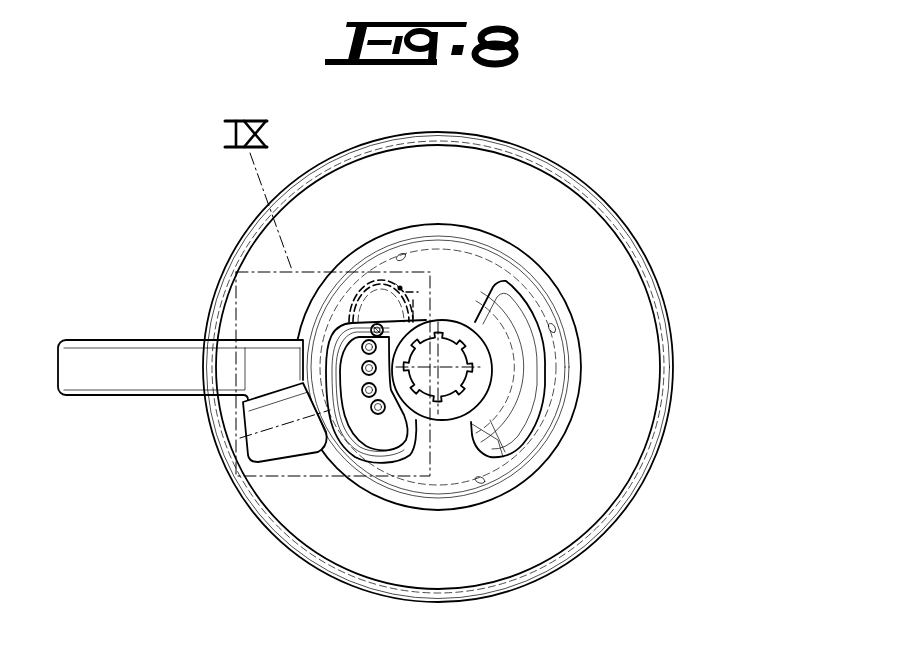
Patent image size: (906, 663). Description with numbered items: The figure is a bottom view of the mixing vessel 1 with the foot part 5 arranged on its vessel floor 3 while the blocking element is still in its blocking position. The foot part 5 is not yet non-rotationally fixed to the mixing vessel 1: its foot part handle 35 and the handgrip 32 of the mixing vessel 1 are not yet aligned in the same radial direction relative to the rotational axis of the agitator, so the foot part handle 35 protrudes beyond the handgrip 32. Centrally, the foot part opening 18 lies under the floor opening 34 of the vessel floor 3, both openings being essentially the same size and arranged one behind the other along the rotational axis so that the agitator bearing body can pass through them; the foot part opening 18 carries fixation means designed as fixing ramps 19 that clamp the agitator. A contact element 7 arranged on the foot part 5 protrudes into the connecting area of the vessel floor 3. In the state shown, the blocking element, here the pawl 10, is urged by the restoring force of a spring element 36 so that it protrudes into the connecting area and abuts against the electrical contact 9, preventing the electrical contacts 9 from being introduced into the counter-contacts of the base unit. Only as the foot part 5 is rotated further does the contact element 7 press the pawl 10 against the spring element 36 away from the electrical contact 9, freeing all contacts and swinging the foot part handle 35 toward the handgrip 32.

The mixing vessel 1 is at (645, 222).
The vessel floor 3 is at (512, 558).
The foot part 5 is at (530, 485).
The contact element 7 is at (368, 324).
The electrical contact 9 is at (367, 393).
The pawl 10 is at (392, 317).
The foot part opening 18 is at (440, 362).
The fixing ramps 19 is at (463, 386).
The handgrip 32 is at (138, 373).
The floor opening 34 is at (440, 367).
The foot part handle 35 is at (278, 440).
The spring element 36 is at (410, 285).